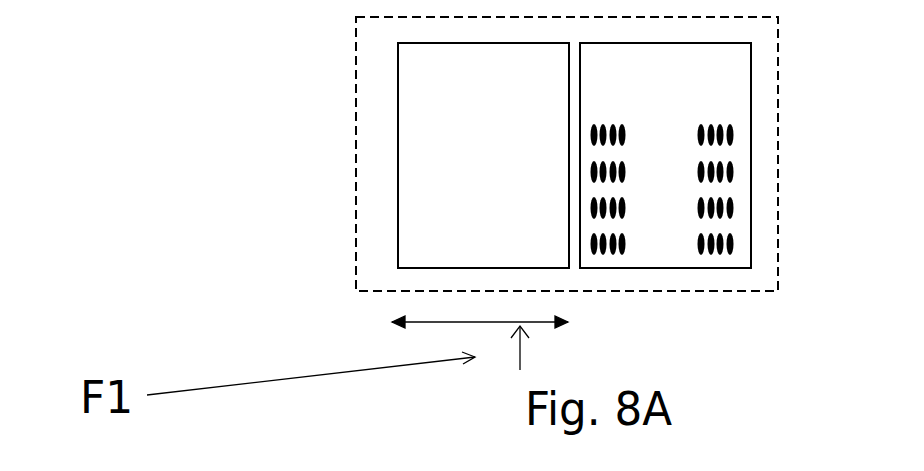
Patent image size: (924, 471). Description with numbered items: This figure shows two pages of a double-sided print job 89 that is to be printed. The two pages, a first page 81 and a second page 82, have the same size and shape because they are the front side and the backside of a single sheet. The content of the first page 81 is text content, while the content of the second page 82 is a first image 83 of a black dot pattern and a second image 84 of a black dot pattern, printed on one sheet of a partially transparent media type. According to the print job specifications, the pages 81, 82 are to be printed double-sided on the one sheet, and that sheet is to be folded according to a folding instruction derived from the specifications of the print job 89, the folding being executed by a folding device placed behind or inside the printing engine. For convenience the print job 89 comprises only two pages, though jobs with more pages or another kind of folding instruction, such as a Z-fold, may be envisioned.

The first page 81 is at (398, 98).
The second page 82 is at (752, 228).
The first image 83 is at (731, 172).
The second image 84 is at (605, 248).
The double-sided print job 89 is at (738, 292).